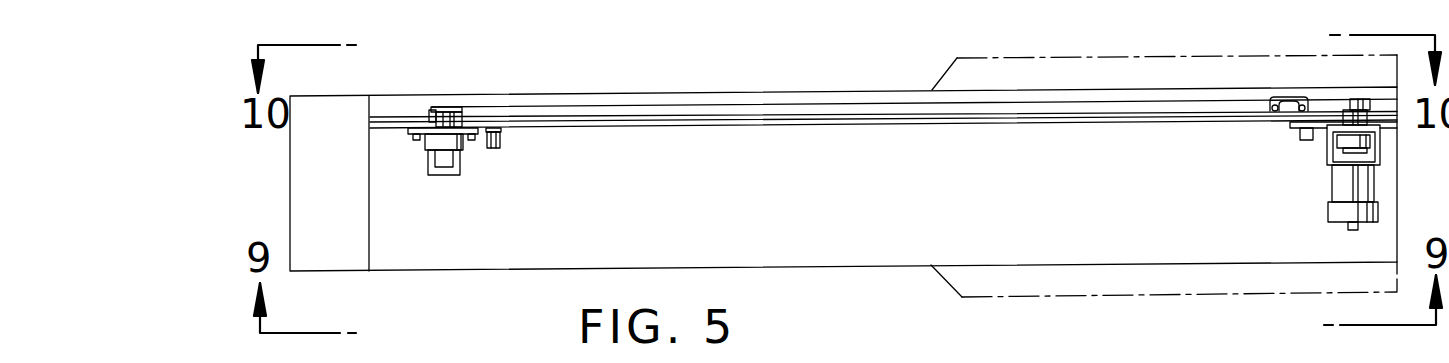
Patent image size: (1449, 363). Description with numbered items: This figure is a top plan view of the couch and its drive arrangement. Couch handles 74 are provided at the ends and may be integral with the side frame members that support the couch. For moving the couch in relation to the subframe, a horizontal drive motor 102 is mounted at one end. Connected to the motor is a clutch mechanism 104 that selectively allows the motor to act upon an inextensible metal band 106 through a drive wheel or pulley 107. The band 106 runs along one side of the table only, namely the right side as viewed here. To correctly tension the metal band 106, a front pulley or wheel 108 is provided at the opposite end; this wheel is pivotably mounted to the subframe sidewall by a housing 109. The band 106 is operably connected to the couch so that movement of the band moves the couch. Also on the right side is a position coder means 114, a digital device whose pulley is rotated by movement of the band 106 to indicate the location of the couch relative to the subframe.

The couch handle 74 is at (963, 77).
The horizontal drive motor 102 is at (1345, 187).
The clutch mechanism 104 is at (1343, 141).
The inextensible metal band 106 is at (597, 112).
The drive wheel or pulley 107 is at (1349, 108).
The front pulley or wheel 108 is at (443, 115).
The housing 109 is at (447, 140).
The position coder means 114 is at (502, 141).